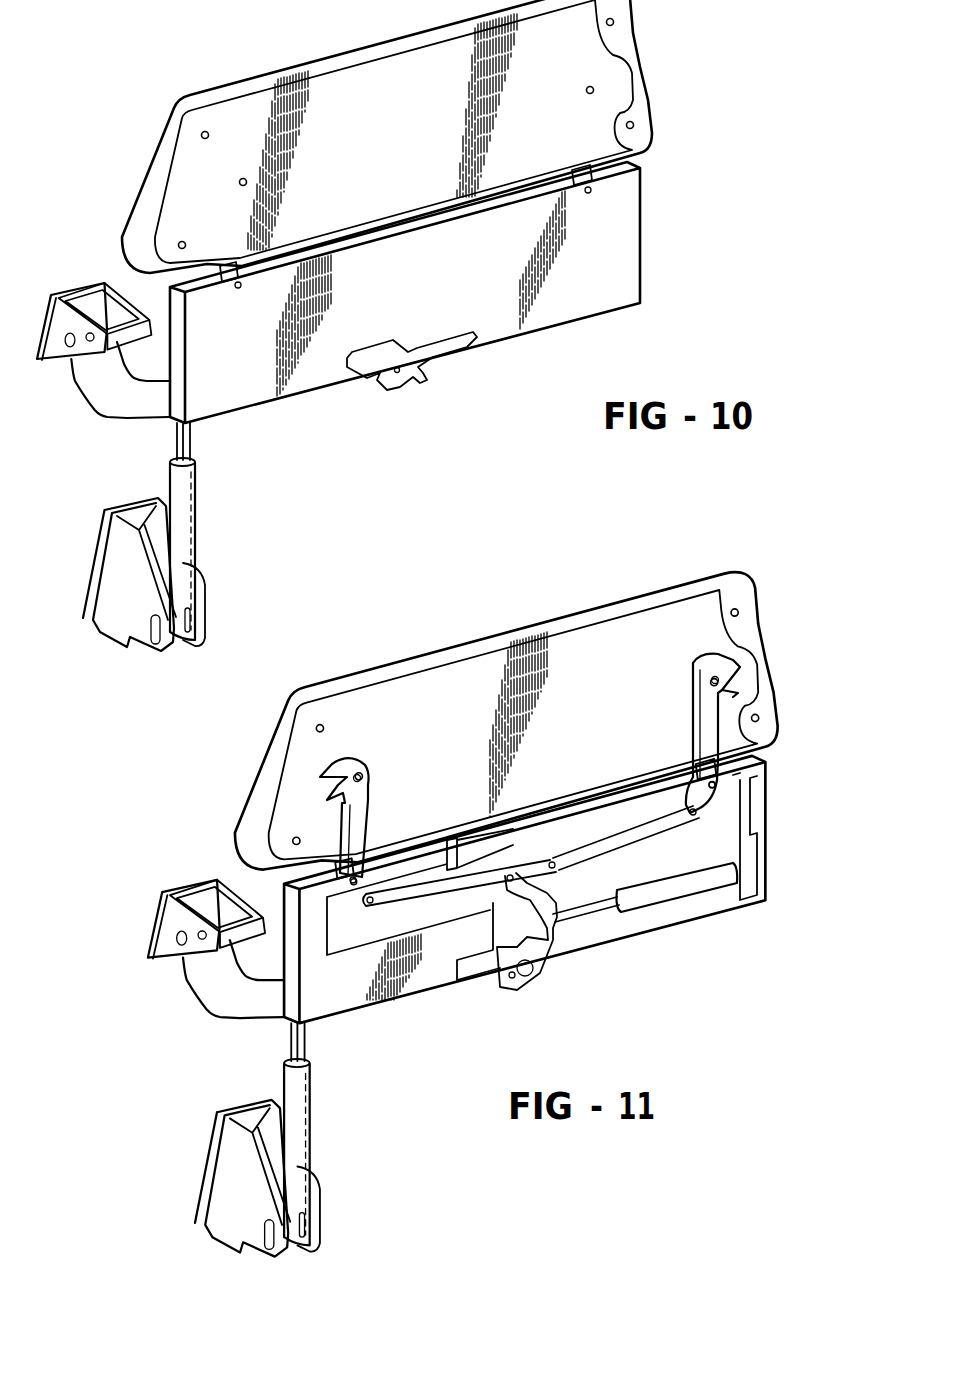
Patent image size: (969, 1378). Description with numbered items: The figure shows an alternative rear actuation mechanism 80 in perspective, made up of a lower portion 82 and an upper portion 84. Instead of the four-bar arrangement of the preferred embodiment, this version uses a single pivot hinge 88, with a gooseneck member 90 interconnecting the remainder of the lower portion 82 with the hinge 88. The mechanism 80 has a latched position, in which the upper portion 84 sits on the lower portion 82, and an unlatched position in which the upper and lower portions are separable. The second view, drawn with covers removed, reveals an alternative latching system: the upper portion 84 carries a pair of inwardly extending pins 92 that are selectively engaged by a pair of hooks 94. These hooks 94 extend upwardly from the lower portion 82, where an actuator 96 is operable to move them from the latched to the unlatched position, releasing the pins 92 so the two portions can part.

In FIG. 10, the rear actuation mechanism 80 is at (695, 147).
In FIG. 11, the rear actuation mechanism 80 is at (788, 777).
In FIG. 10, the lower portion 82 is at (640, 205).
In FIG. 11, the lower portion 82 is at (764, 815).
In FIG. 10, the upper portion 84 is at (615, 78).
In FIG. 11, the upper portion 84 is at (755, 630).
In FIG. 10, the single pivot hinge 88 is at (70, 362).
In FIG. 11, the single pivot hinge 88 is at (206, 919).
In FIG. 10, the gooseneck member 90 is at (127, 412).
In FIG. 11, the gooseneck member 90 is at (233, 979).
In FIG. 11, the inwardly extending pins 92 is at (362, 779).
In FIG. 11, the hooks 94 is at (703, 703).
In FIG. 11, the actuator 96 is at (648, 895).